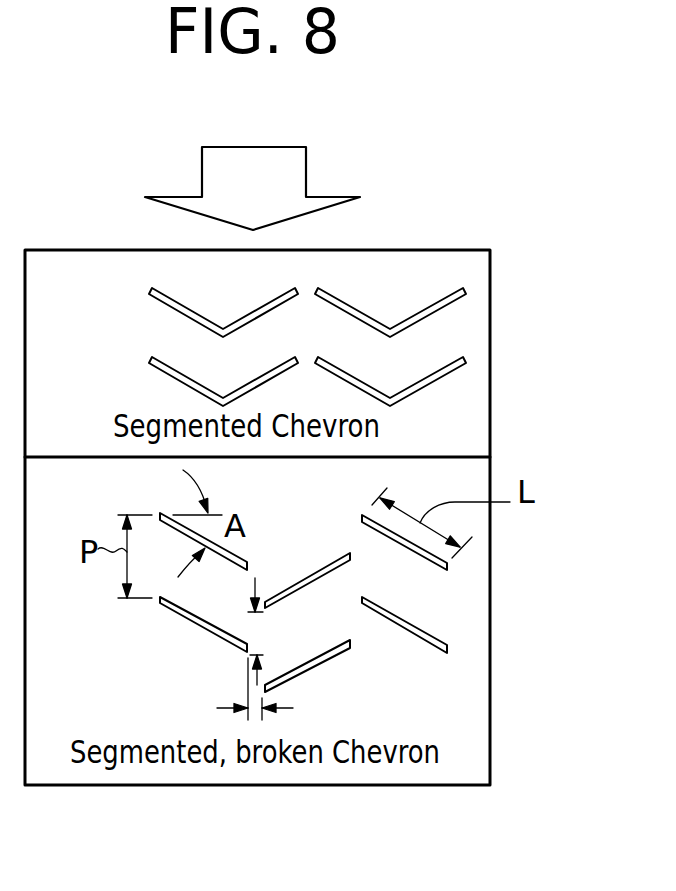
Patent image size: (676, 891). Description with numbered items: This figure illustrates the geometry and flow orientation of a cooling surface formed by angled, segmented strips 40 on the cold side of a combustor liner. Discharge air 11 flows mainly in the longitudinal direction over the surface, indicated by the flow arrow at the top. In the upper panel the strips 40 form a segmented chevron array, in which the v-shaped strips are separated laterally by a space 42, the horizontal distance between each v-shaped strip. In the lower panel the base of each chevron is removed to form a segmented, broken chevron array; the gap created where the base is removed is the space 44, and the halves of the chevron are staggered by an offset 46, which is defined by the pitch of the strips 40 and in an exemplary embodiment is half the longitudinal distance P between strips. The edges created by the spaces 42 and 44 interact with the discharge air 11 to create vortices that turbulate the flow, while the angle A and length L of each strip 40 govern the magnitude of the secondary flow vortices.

The discharge air 11 is at (257, 147).
The strips 40 is at (458, 270).
The space 42 is at (307, 328).
The space 44 is at (248, 708).
The offset 46 is at (255, 633).